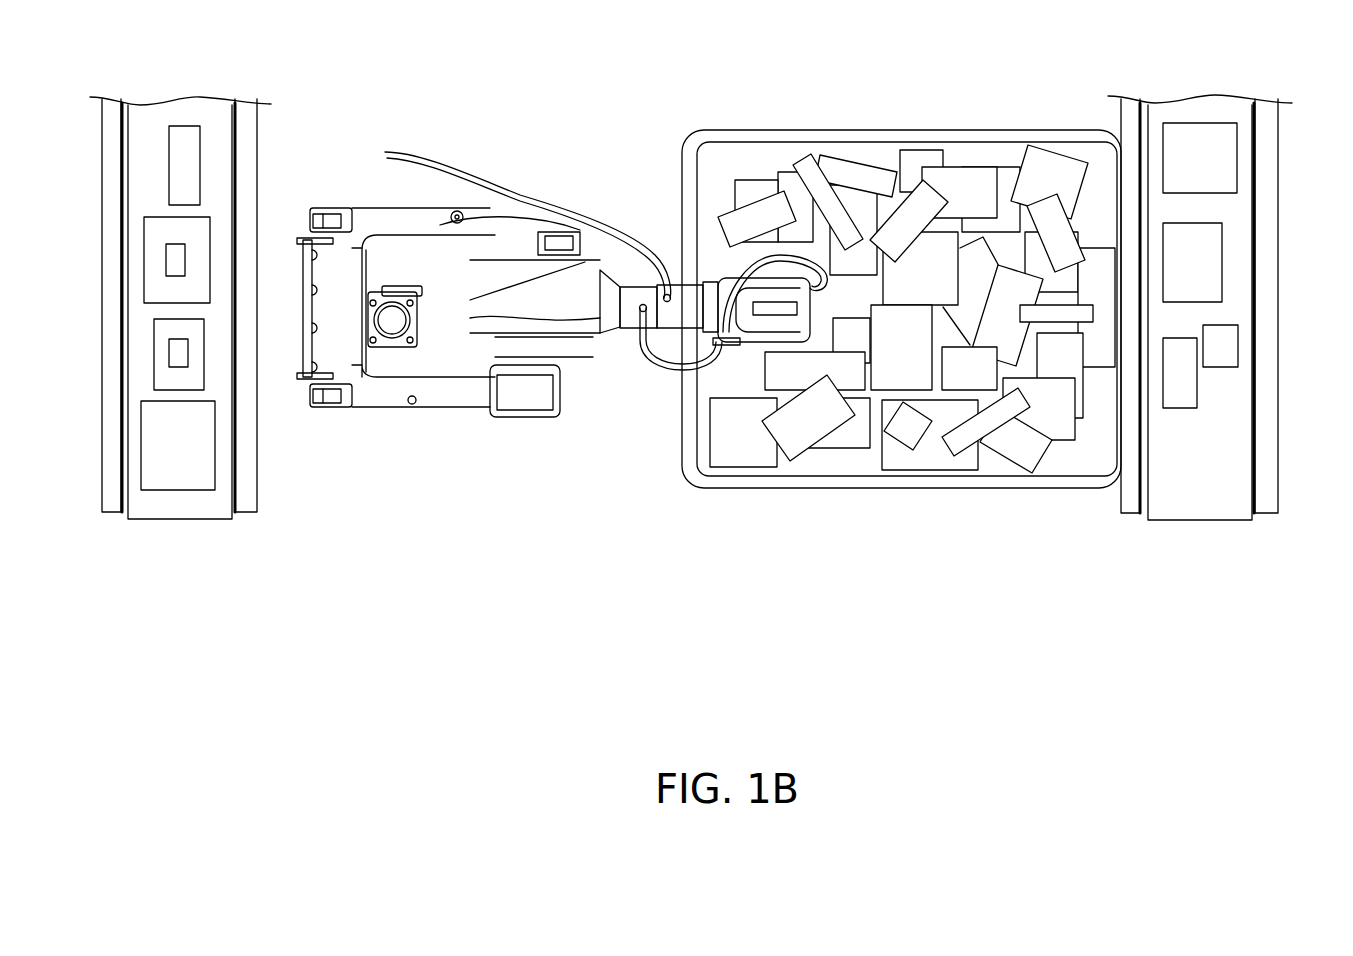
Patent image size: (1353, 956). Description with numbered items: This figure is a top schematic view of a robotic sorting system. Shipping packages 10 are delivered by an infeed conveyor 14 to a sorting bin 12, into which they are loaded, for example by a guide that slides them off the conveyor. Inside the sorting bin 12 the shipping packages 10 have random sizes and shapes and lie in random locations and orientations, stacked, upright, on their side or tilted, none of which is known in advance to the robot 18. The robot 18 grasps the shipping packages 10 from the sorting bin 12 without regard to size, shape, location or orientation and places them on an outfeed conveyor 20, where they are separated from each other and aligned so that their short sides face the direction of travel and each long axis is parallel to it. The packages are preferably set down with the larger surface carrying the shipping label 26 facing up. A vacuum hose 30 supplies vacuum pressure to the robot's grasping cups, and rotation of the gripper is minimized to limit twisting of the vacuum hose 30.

The shipping packages 10 is at (201, 155).
The sorting bin 12 is at (859, 128).
The infeed conveyor 14 is at (1278, 423).
The robot 18 is at (368, 207).
The outfeed conveyor 20 is at (259, 423).
The shipping label 26 is at (166, 255).
The vacuum hose 30 is at (737, 282).